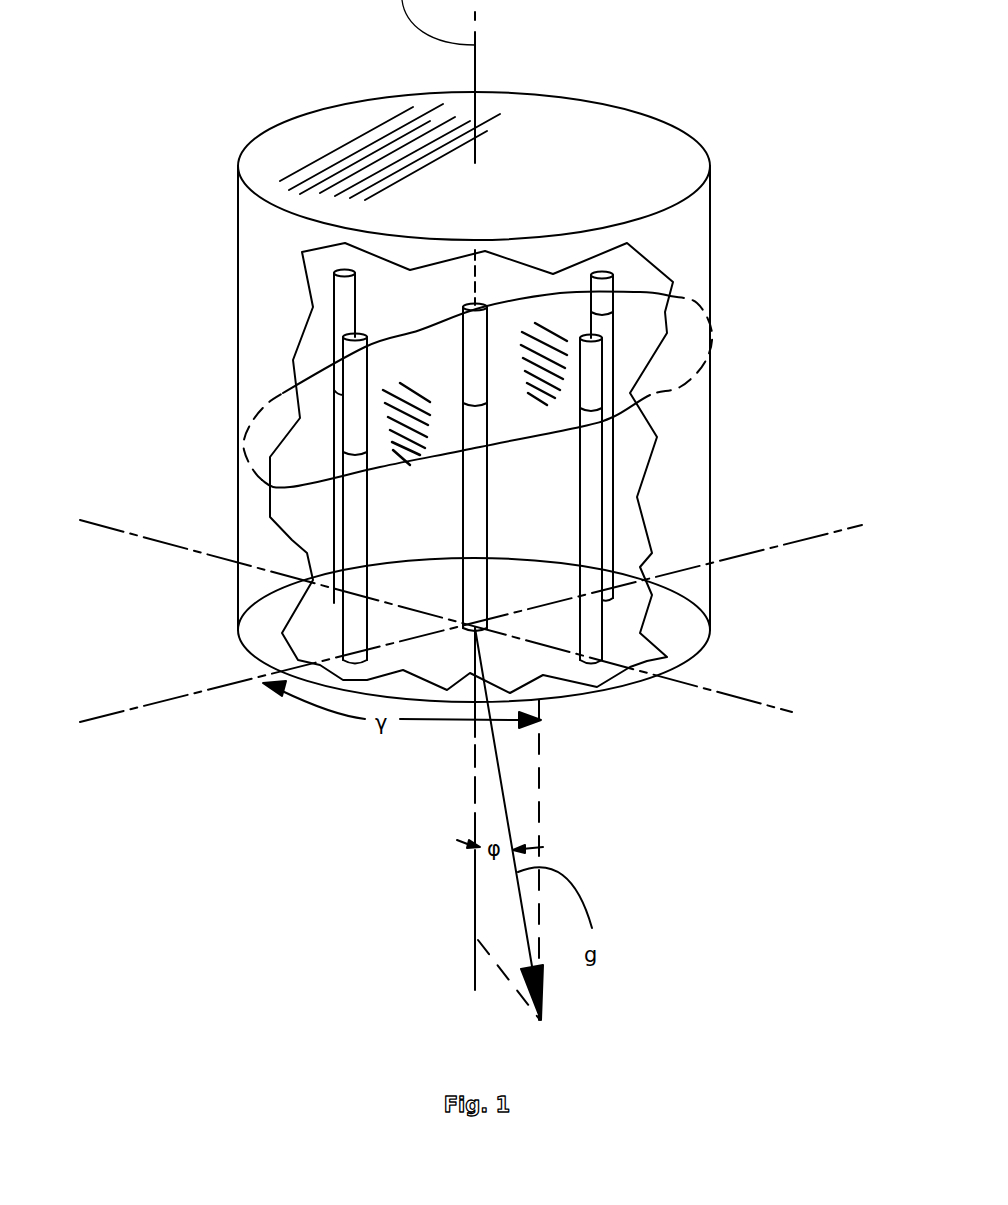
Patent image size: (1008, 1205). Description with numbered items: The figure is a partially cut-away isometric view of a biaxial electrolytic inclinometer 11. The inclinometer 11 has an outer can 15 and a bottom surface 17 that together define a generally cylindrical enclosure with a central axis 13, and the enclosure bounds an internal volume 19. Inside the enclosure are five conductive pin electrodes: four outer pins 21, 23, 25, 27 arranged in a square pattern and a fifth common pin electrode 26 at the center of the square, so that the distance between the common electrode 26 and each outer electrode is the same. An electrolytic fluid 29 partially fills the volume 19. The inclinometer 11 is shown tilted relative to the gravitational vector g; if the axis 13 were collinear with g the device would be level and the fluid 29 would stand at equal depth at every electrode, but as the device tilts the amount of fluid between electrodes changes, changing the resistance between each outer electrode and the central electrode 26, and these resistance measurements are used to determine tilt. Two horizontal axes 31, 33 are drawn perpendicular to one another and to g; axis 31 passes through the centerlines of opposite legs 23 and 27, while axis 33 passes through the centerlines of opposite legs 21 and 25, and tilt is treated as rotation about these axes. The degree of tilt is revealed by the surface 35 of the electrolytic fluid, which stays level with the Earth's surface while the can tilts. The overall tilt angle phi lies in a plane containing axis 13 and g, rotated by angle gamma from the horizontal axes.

The biaxial electrolytic inclinometer 11 is at (800, 312).
The central axis 13 is at (476, 879).
The outer can 15 is at (258, 280).
The bottom surface 17 is at (438, 587).
The internal volume 19 is at (427, 297).
The conductive pin electrode 21 is at (353, 365).
The conductive pin electrode 23 is at (340, 297).
The conductive pin electrode 25 is at (603, 302).
The common pin electrode 26 is at (487, 340).
The conductive pin electrode 27 is at (592, 460).
The electrolytic fluid 29 is at (530, 500).
The horizontal axis 31 is at (742, 693).
The horizontal axis 33 is at (163, 705).
The surface of the electrolytic fluid 35 is at (560, 327).